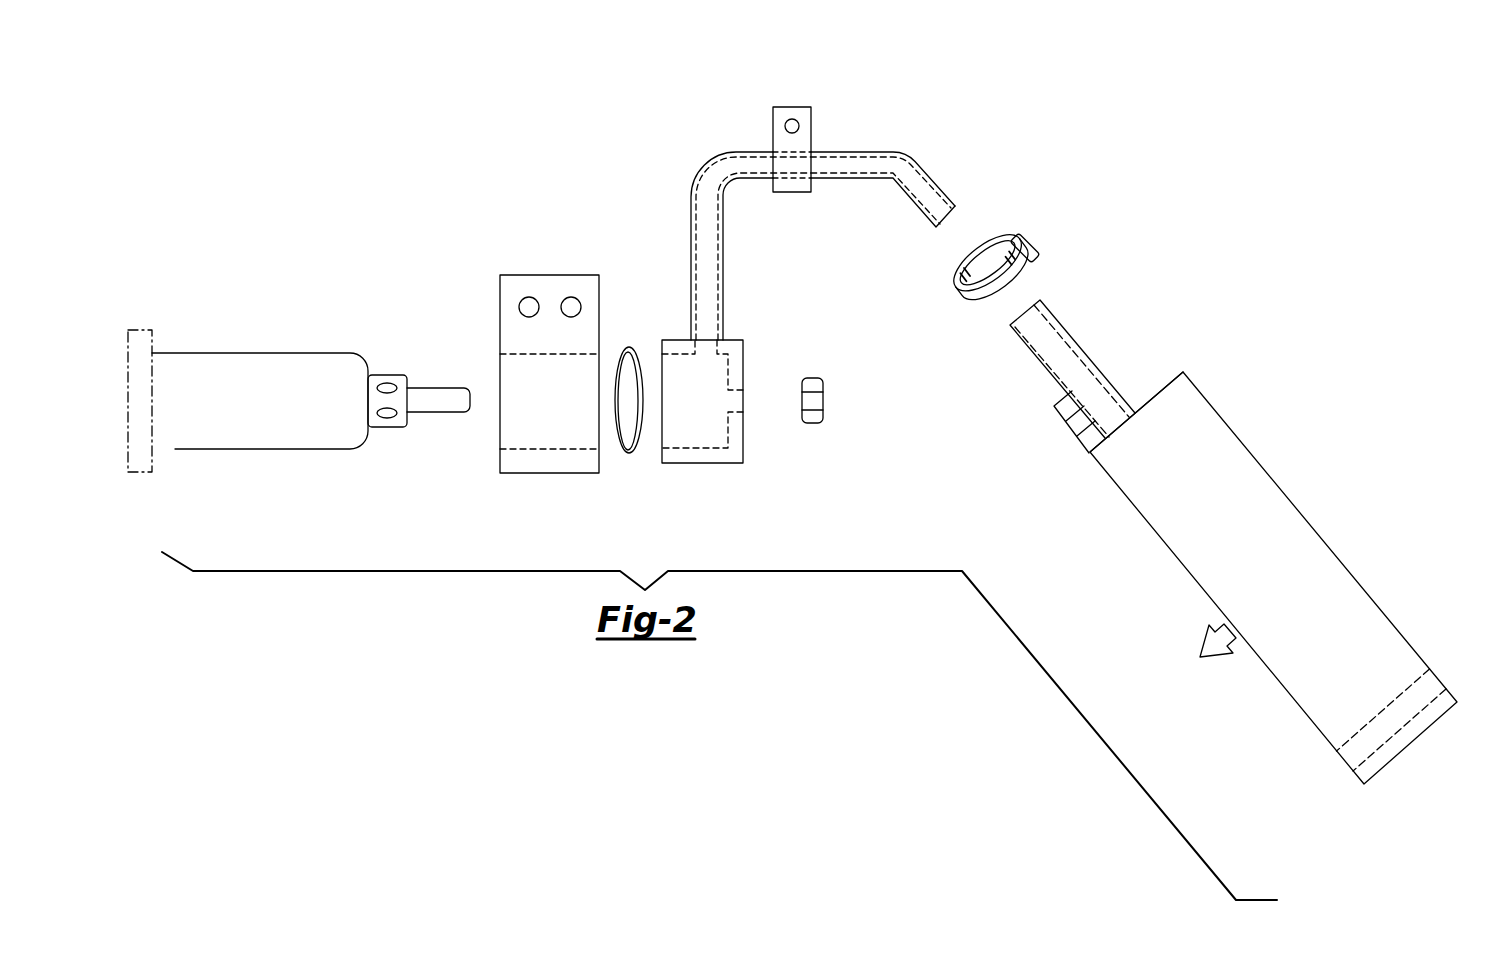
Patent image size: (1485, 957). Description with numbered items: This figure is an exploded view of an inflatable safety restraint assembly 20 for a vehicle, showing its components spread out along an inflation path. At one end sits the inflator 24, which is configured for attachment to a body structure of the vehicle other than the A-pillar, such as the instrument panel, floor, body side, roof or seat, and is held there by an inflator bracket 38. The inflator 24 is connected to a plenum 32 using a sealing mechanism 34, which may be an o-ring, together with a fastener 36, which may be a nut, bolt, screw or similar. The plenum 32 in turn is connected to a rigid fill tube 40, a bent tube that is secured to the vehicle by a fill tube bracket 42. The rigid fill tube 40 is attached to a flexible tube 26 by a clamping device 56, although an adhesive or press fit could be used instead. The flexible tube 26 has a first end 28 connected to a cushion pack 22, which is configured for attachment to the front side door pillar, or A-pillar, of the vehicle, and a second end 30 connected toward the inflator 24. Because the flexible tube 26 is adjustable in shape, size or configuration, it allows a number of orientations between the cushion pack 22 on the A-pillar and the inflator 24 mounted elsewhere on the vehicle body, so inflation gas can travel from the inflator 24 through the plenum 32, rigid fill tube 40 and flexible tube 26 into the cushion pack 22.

The inflatable safety restraint assembly 20 is at (382, 212).
The cushion pack 22 is at (1245, 478).
The inflator 24 is at (256, 378).
The flexible tube 26 is at (1090, 350).
The first end 28 is at (1138, 406).
The second end 30 is at (1048, 300).
The plenum 32 is at (691, 432).
The sealing mechanism 34 is at (631, 349).
The fastener 36 is at (812, 416).
The inflator bracket 38 is at (515, 338).
The rigid fill tube 40 is at (713, 165).
The fill tube bracket 42 is at (810, 125).
The clamping device 56 is at (1033, 244).